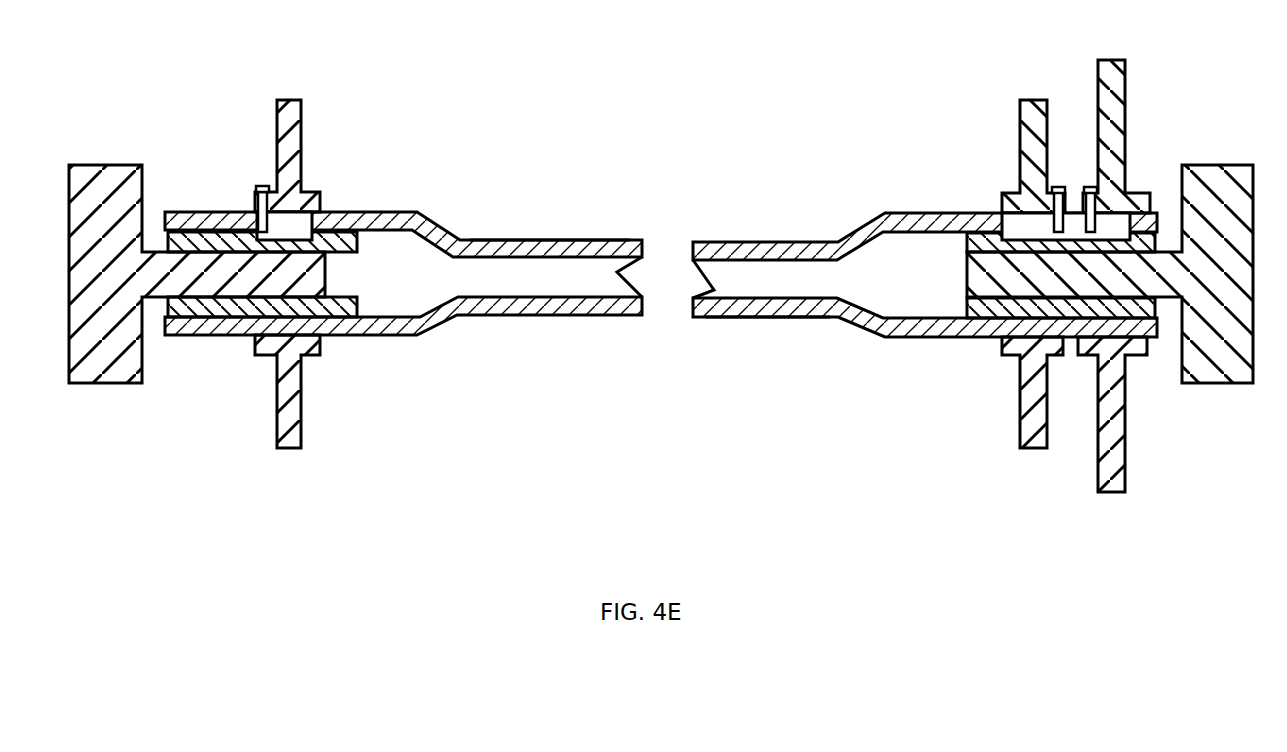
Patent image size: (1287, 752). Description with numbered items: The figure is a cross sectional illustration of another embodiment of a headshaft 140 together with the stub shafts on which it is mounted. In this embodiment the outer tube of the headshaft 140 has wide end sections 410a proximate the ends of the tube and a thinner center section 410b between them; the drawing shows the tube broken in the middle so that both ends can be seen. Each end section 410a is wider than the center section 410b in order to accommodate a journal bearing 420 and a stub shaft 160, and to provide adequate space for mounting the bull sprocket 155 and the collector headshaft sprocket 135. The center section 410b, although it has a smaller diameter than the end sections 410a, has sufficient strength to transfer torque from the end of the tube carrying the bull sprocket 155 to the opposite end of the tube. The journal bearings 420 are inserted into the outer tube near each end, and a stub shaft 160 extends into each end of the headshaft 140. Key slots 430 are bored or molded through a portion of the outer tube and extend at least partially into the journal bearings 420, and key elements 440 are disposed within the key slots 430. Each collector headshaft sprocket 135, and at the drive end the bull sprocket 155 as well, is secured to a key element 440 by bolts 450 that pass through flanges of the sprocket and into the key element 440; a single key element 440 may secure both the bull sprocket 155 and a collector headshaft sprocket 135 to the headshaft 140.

The stub shaft 160 is at (130, 173).
The collector headshaft sprocket 135 is at (287, 112).
The bull sprocket 155 is at (1107, 463).
The bolt 450 is at (260, 188).
The key element 440 is at (300, 232).
The key slot 430 is at (252, 212).
The journal bearing 420 is at (360, 246).
The center section 410b is at (587, 303).
The end section 410a is at (902, 332).
The headshaft 140 is at (740, 103).